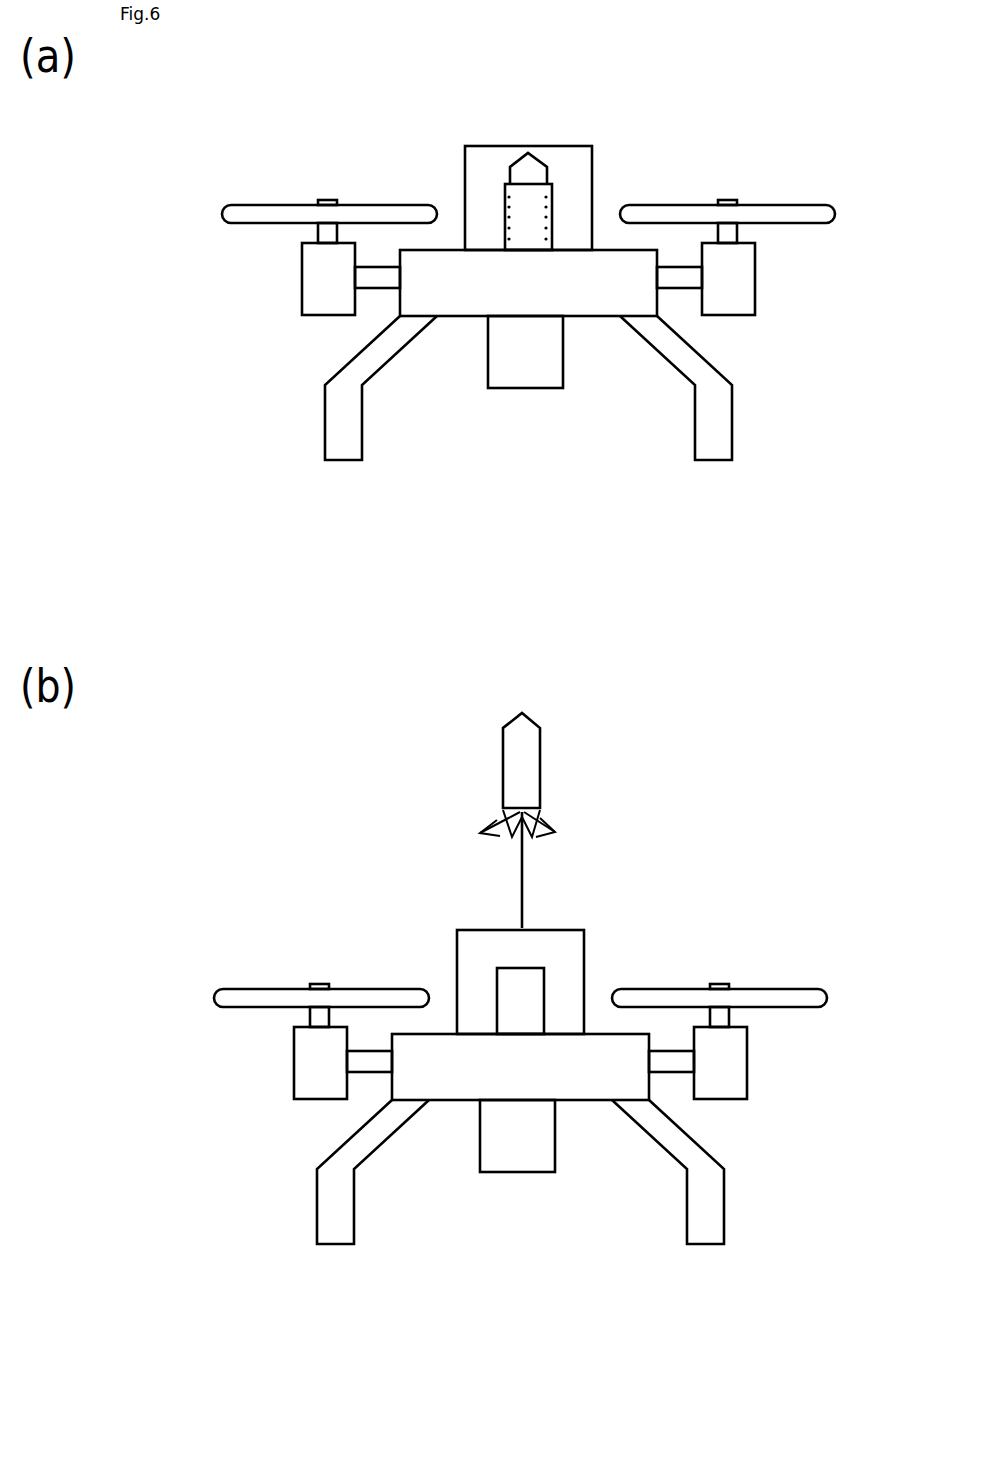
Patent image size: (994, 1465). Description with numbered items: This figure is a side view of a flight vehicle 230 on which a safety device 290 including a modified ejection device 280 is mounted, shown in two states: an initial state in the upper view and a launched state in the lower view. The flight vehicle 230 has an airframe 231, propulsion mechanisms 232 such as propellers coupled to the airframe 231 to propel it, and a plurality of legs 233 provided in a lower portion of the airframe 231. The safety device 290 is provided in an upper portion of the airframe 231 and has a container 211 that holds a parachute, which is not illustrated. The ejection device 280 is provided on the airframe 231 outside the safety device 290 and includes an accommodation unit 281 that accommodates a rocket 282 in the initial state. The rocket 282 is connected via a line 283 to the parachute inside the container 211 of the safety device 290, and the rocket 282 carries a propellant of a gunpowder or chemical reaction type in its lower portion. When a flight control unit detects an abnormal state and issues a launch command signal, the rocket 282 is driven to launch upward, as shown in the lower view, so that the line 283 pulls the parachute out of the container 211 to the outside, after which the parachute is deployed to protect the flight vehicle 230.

The container 211 is at (480, 172).
The flight vehicle 230 is at (523, 410).
The airframe 231 is at (475, 300).
The propulsion mechanism 232 is at (253, 213).
The leg 233 is at (350, 443).
The ejection device 280 is at (553, 197).
The accommodation unit 281 is at (505, 198).
The rocket 282 is at (525, 168).
The line 283 is at (520, 857).
The safety device 290 is at (595, 146).